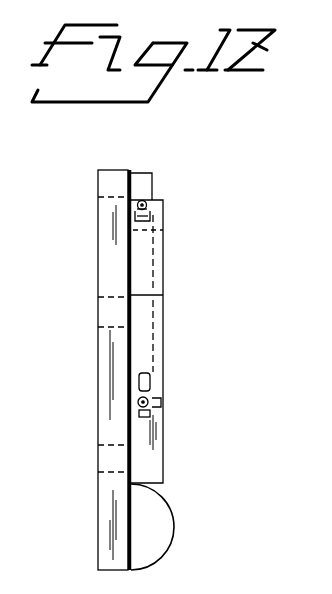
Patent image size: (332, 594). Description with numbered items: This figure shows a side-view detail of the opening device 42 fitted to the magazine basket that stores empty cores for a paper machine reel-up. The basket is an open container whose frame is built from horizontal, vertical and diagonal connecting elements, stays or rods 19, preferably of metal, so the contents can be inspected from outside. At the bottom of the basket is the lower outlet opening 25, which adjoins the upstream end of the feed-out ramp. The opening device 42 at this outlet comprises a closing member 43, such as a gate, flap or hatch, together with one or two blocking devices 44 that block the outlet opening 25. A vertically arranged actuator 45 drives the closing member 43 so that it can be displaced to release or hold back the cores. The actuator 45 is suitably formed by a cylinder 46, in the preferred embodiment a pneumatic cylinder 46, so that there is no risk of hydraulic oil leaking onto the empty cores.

The rods 19 is at (118, 463).
The lower outlet opening 25 is at (172, 503).
The opening device 42 is at (163, 432).
The closing member 43 is at (163, 203).
The blocking device 44 is at (213, 200).
The actuator 45 is at (156, 323).
The cylinder 46 is at (150, 258).